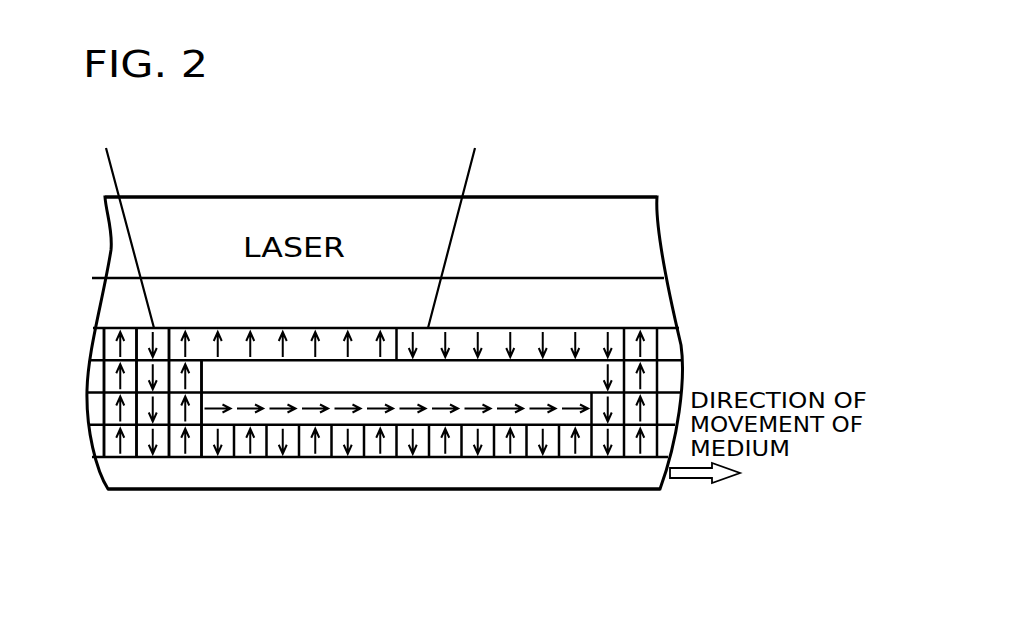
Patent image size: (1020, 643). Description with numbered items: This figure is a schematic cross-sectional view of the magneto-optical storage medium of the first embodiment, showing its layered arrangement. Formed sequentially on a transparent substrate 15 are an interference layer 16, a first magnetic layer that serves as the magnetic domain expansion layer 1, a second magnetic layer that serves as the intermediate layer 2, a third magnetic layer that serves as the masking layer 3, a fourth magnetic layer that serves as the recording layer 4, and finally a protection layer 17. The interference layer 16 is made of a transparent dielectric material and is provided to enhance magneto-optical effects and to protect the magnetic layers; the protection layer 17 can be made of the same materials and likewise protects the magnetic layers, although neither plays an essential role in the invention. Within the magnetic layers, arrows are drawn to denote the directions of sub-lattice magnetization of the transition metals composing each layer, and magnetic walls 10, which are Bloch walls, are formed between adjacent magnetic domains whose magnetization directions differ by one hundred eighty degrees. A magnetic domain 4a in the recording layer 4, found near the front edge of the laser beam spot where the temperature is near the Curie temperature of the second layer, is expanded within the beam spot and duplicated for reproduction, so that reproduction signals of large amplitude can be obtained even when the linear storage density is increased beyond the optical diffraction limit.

The magnetic domain expansion layer 1 is at (97, 347).
The intermediate layer 2 is at (97, 382).
The masking layer 3 is at (97, 412).
The recording layer 4 is at (98, 437).
The magnetic walls (Bloch walls) 10 is at (132, 460).
The magnetic domain 4a is at (185, 460).
The transparent substrate 15 is at (647, 235).
The interference layer 16 is at (660, 298).
The protection layer 17 is at (654, 478).